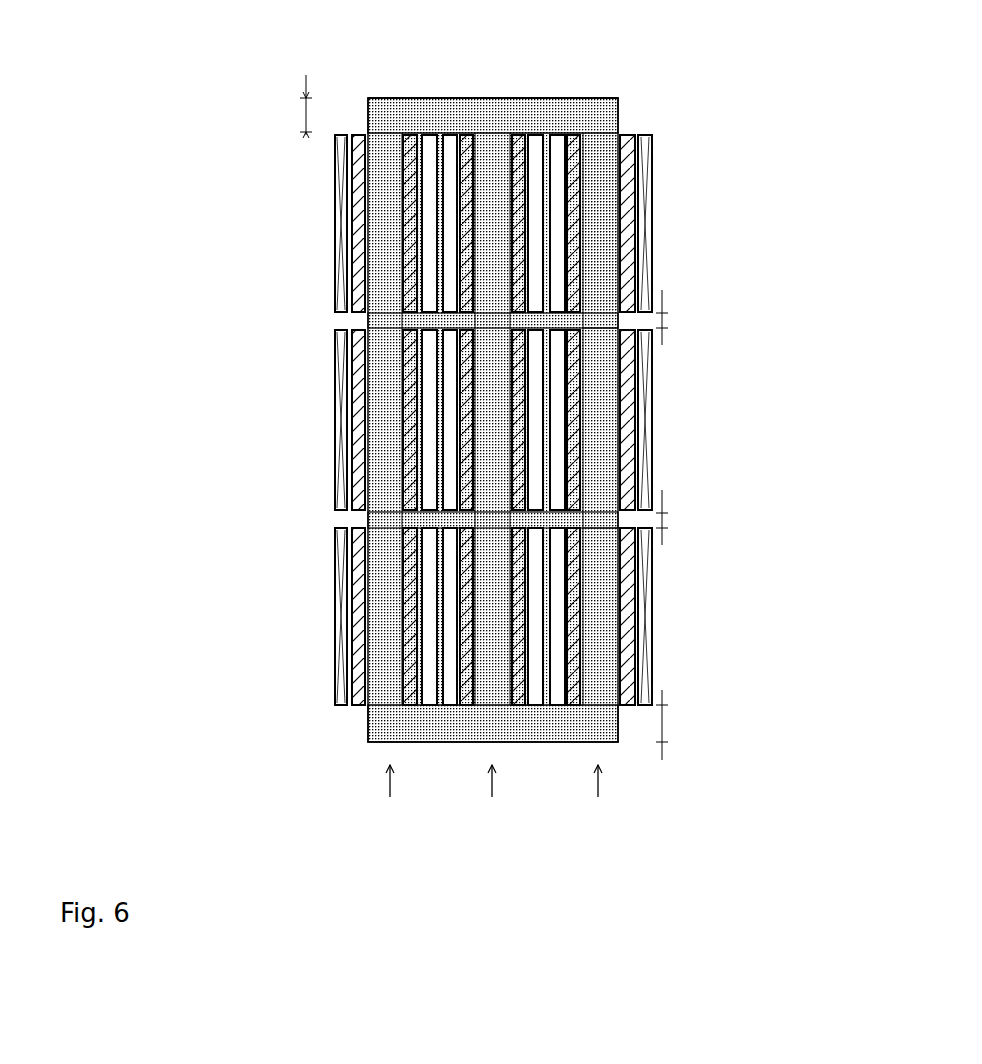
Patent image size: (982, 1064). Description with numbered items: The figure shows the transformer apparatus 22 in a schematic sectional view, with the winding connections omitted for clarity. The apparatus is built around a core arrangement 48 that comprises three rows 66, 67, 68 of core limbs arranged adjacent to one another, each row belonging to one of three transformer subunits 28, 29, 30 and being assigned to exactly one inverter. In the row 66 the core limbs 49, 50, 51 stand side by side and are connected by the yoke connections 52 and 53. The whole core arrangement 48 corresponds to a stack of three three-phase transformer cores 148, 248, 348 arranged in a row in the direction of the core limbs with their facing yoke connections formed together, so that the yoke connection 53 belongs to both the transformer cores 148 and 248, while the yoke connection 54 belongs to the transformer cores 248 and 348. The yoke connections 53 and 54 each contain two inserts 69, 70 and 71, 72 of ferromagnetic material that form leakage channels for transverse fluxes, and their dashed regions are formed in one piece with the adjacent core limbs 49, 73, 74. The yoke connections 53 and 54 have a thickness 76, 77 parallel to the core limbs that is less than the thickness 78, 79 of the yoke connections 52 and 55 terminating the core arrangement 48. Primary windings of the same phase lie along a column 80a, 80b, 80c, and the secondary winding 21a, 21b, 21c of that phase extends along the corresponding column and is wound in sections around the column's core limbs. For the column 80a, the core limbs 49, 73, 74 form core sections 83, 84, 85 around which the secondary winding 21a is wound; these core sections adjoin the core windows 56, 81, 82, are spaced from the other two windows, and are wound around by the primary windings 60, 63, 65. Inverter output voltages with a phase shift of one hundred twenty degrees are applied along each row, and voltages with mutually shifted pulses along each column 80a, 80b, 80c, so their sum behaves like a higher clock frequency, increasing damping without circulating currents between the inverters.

The transformer apparatus 22 is at (705, 38).
The core arrangement 48 is at (612, 115).
The yoke connection 52 is at (390, 108).
The yoke connection 55 is at (372, 725).
The yoke connection 53 is at (368, 318).
The yoke connection 54 is at (368, 520).
The core limb 49 is at (387, 223).
The core limb 50 is at (494, 419).
The core limb 51 is at (603, 223).
The core limb 73 is at (387, 420).
The core limb 74 is at (387, 616).
The three-phase transformer core 148 is at (605, 272).
The three-phase transformer core 248 is at (607, 470).
The three-phase transformer core 348 is at (612, 672).
The secondary winding 21a is at (358, 217).
The secondary winding 21b is at (521, 690).
The secondary winding 21c is at (628, 705).
The core section 83 is at (404, 223).
The core section 84 is at (404, 420).
The core section 85 is at (404, 616).
The core window 56 is at (437, 265).
The core window 81 is at (435, 472).
The core window 82 is at (437, 667).
The primary winding 60 is at (340, 163).
The primary winding 63 is at (340, 462).
The primary winding 65 is at (340, 660).
The insert 69 is at (405, 336).
The insert 71 is at (405, 534).
The insert 70 is at (600, 330).
The insert 72 is at (600, 528).
The row of core limbs 66 is at (705, 168).
The row of core limbs 67 is at (705, 397).
The row of core limbs 68 is at (705, 600).
The transformer subunit 28 is at (705, 212).
The transformer subunit 29 is at (705, 442).
The transformer subunit 30 is at (705, 642).
The thickness 76 is at (665, 320).
The thickness 77 is at (665, 518).
The thickness 78 is at (305, 110).
The thickness 79 is at (663, 713).
The column 80a is at (395, 798).
The column 80b is at (498, 798).
The column 80c is at (602, 798).